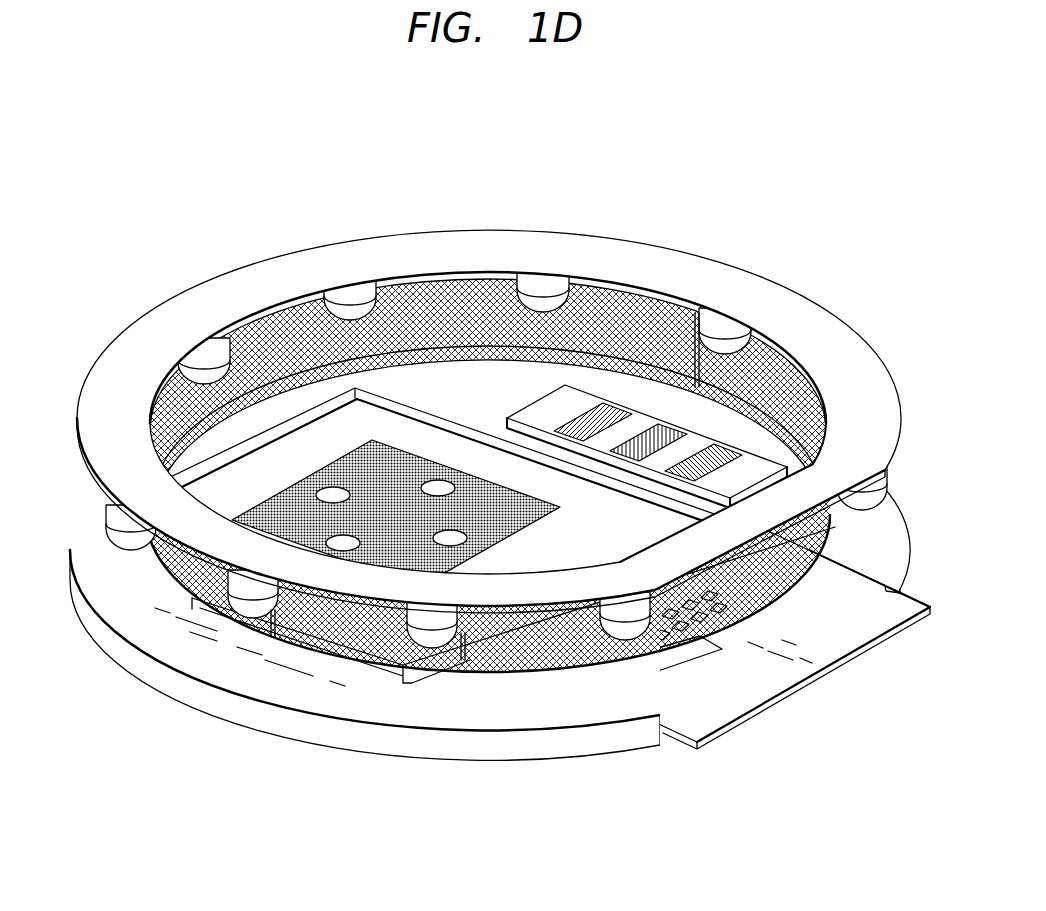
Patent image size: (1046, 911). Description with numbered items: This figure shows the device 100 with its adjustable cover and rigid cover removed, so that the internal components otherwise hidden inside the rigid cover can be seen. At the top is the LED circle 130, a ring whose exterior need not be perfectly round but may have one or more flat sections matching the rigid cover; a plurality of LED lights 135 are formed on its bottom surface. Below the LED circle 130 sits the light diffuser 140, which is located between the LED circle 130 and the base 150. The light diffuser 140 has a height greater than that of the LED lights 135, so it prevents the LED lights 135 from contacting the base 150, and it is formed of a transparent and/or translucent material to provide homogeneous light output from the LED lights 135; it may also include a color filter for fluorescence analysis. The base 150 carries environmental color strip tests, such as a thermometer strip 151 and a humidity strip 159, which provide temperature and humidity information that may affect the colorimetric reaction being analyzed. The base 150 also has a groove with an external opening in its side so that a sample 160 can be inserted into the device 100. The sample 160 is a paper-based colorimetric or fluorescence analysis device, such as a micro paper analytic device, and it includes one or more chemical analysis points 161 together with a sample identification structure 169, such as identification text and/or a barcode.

The device 100 is at (510, 92).
The LED circle 130 is at (797, 309).
The LED lights 135 is at (435, 625).
The light diffuser 140 is at (288, 336).
The base 150 is at (168, 640).
The thermometer strip 151 is at (397, 672).
The humidity strip 159 is at (564, 399).
The sample 160 is at (810, 653).
The chemical analysis points 161 is at (408, 470).
The sample identification structure 169 is at (687, 647).